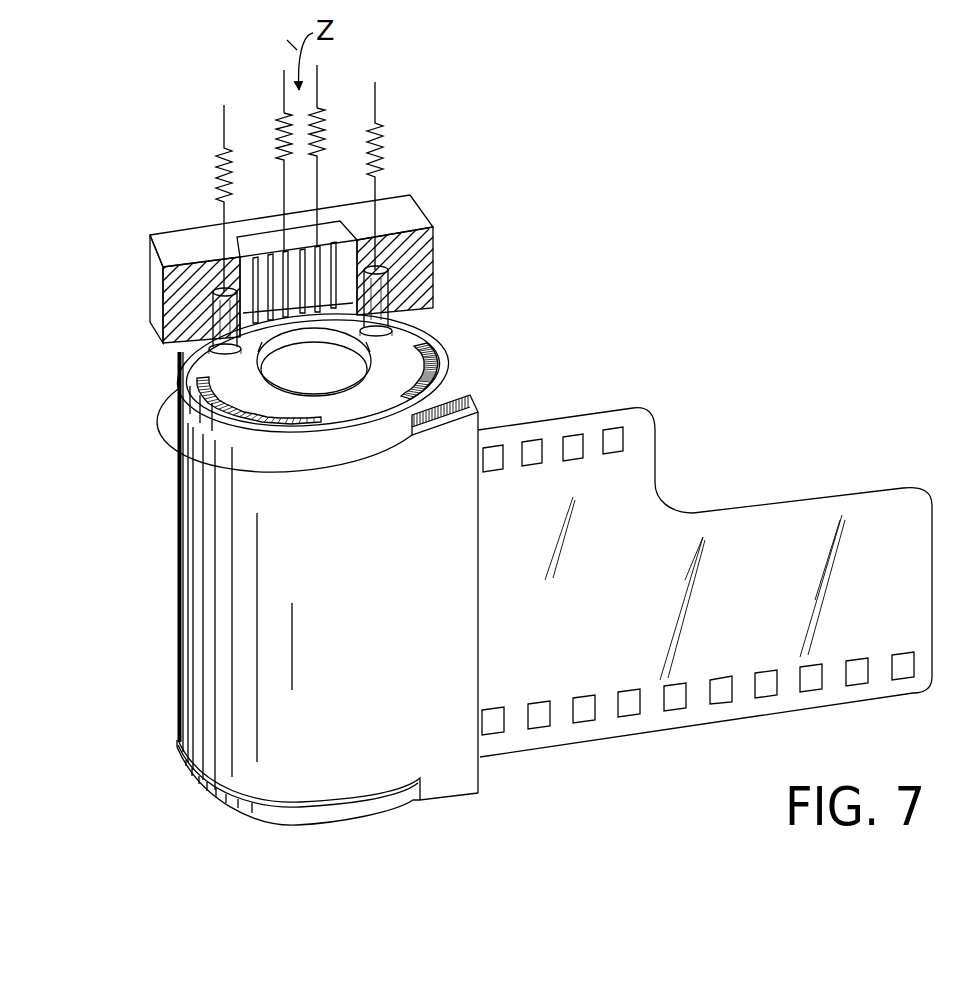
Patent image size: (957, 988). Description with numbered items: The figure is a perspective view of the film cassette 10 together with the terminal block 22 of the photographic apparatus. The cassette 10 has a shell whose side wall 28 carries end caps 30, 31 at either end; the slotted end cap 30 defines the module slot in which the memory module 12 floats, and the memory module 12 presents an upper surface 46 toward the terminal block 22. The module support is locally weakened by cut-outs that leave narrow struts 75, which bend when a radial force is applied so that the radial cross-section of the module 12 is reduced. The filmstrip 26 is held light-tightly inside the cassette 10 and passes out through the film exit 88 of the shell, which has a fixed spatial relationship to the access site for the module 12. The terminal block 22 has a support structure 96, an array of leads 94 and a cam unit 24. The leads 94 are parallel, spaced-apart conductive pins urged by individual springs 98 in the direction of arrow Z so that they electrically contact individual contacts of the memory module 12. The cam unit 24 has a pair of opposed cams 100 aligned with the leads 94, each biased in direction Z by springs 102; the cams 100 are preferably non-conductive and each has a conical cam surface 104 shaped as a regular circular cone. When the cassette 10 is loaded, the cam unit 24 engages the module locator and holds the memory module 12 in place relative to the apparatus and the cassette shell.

The film cassette 10 is at (178, 602).
The memory module 12 is at (243, 390).
The terminal block 22 is at (163, 238).
The cam unit 24 is at (398, 300).
The filmstrip 26 is at (768, 507).
The side wall 28 is at (366, 648).
The end cap 30 is at (217, 433).
The end cap 31 is at (287, 826).
The upper surface 46 is at (190, 343).
The struts 75 is at (282, 420).
The film exit 88 is at (468, 432).
The leads 94 is at (245, 232).
The support structure 96 is at (435, 243).
The springs 98 is at (284, 82).
The cams 100 is at (392, 282).
The springs 102 is at (224, 118).
The cam surface 104 is at (257, 363).